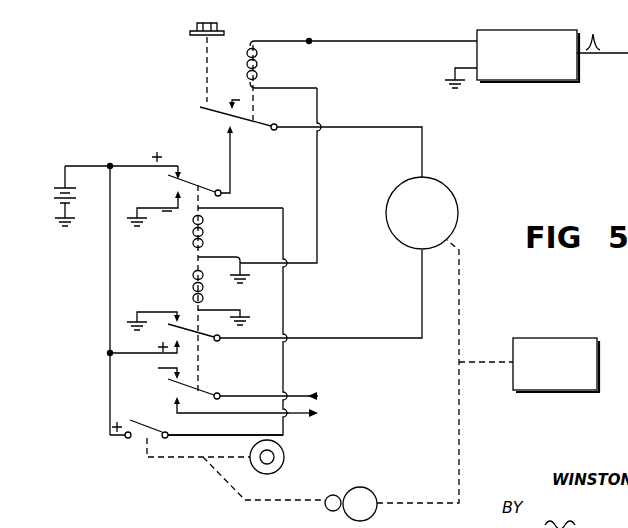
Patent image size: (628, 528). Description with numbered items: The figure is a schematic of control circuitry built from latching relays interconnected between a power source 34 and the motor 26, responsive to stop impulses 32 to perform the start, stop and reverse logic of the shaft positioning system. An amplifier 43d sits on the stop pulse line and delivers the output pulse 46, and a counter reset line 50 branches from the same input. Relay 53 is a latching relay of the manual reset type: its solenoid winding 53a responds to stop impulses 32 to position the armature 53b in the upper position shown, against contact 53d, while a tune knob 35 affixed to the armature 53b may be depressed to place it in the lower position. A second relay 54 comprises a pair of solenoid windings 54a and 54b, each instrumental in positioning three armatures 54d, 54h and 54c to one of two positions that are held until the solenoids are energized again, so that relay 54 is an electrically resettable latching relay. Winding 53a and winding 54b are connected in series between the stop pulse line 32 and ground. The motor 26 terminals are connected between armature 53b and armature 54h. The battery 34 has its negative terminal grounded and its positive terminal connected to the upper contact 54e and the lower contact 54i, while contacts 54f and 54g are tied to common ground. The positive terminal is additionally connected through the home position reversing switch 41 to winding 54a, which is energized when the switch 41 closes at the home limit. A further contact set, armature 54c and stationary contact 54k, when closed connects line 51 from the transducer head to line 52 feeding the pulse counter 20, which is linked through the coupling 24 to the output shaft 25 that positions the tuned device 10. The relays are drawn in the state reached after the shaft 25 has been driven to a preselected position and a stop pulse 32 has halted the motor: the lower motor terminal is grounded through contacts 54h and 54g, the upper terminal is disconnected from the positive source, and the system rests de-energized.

The tuned device 10 is at (576, 338).
The counter 20 is at (285, 455).
The drive coupling 24 is at (347, 492).
The output shaft 25 is at (460, 452).
The motor 26 is at (442, 182).
The stop impulses 32 is at (407, 40).
The battery 34 is at (61, 185).
The tune knob 35 is at (226, 28).
The home position reversing switch 41 is at (138, 442).
The amplifier 43d is at (543, 30).
The amplifier output pulse 46 is at (592, 56).
The counter reset line 50 is at (309, 40).
The line from transducer head 51 is at (302, 393).
The line to pulse counter 52 is at (302, 415).
The latching relay 53 is at (190, 103).
The solenoid winding 53a is at (260, 62).
The armature 53b is at (221, 115).
The relay contact 53d is at (235, 140).
The second relay 54 is at (167, 276).
The solenoid winding 54a is at (206, 232).
The solenoid winding 54b is at (206, 296).
The armature 54c is at (209, 393).
The armature 54d is at (190, 184).
The upper contact 54e is at (178, 170).
The relay contact 54f is at (174, 193).
The relay contact 54g is at (178, 313).
The armature 54h is at (207, 341).
The lower contact 54i is at (175, 338).
The stationary contact 54k is at (173, 397).